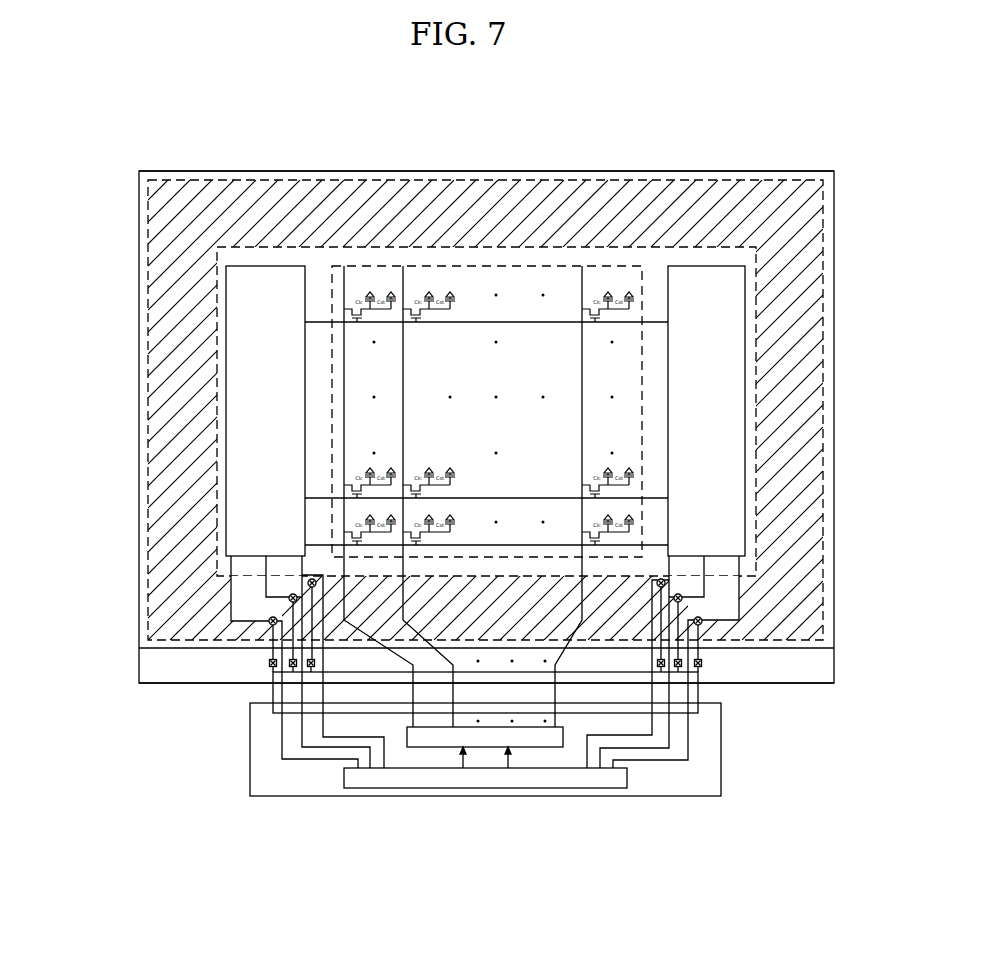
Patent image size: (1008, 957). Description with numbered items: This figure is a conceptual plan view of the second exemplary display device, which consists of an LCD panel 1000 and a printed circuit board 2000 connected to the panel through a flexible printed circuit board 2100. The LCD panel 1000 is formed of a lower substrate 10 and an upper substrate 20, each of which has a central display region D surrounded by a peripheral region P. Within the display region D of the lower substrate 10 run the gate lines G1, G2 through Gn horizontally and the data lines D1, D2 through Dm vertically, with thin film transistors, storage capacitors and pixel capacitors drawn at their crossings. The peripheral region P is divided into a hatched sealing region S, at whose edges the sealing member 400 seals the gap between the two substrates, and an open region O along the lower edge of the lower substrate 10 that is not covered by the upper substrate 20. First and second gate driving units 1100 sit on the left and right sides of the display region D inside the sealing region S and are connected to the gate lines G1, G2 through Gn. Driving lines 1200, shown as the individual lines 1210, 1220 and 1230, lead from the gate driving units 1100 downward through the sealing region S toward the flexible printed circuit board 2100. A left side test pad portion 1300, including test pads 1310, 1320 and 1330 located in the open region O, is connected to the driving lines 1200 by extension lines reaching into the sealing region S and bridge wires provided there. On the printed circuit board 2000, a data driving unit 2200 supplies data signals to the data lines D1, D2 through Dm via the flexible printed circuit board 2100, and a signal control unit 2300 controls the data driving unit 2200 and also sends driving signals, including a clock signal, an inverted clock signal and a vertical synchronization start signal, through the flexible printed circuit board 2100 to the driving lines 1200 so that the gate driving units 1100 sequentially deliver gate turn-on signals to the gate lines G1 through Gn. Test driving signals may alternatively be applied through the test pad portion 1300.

The LCD panel 1000 is at (120, 176).
The lower substrate 10 is at (834, 684).
The upper substrate 20 is at (807, 171).
The first and second gate driving units 1100 is at (263, 266).
The display region D is at (623, 266).
The sealing member 400 is at (815, 402).
The sealing region S is at (825, 628).
The open region O is at (825, 665).
The peripheral region P is at (868, 622).
The gate line Gn is at (486, 313).
The gate line G2 is at (486, 489).
The gate line G1 is at (486, 536).
The data line D1 is at (378, 496).
The data line D2 is at (428, 496).
The data line Dm is at (582, 496).
The driving lines 1200 is at (72, 570).
The first gate signal wiring 1210 is at (300, 558).
The second gate signal wiring 1220 is at (283, 576).
The third gate signal wiring 1230 is at (265, 610).
The test pad portion 1300 is at (128, 708).
The first pad electrode 1310 is at (268, 642).
The second pad electrode 1320 is at (303, 642).
The third pad electrode 1330 is at (292, 667).
The flexible printed circuit board 2100 is at (698, 693).
The printed circuit board 2000 is at (722, 779).
The data driving unit 2200 is at (528, 790).
The signal control unit 2300 is at (428, 790).